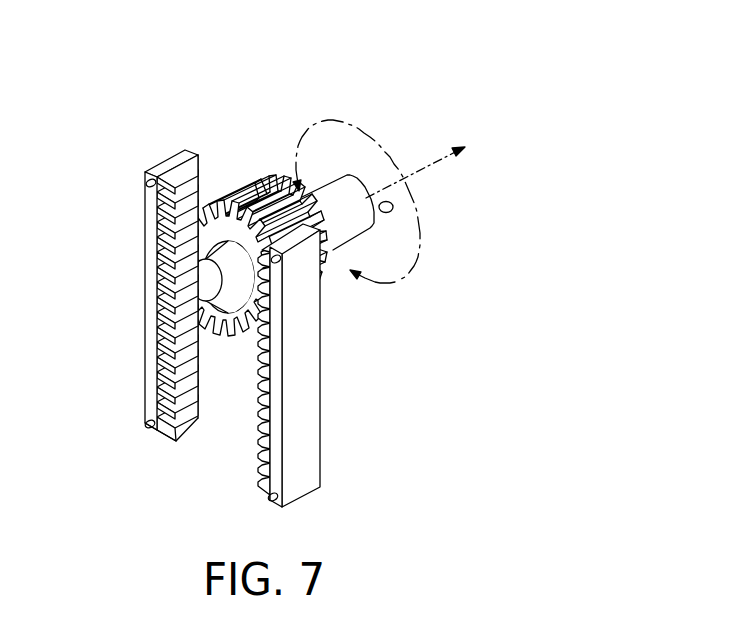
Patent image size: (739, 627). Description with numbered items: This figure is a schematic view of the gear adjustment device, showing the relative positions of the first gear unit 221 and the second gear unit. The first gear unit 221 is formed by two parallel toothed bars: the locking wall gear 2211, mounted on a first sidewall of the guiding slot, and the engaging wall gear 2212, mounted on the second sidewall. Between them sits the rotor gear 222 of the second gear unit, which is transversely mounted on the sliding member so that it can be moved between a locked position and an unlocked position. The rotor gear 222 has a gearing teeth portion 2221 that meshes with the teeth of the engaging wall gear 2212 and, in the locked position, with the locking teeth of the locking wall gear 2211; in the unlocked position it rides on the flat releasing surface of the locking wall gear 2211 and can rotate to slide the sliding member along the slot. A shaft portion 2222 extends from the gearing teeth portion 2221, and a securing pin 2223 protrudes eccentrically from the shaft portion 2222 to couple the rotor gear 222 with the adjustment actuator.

The first gear unit 221 is at (267, 271).
The locking wall gear 2211 is at (165, 167).
The engaging wall gear 2212 is at (308, 405).
The rotor gear 222 is at (390, 174).
The gearing teeth portion 2221 is at (222, 170).
The shaft portion 2222 is at (368, 226).
The securing pin 2223 is at (392, 211).